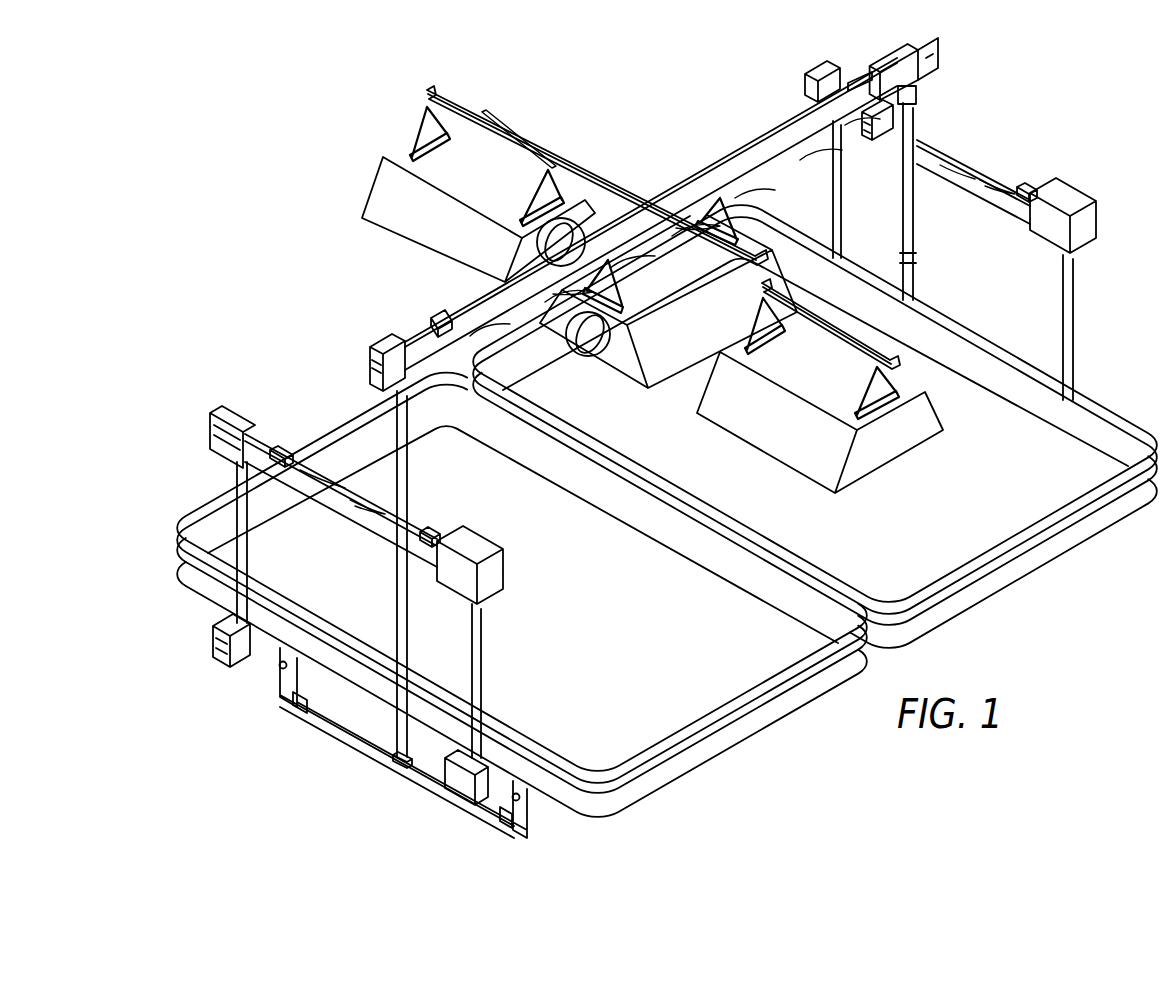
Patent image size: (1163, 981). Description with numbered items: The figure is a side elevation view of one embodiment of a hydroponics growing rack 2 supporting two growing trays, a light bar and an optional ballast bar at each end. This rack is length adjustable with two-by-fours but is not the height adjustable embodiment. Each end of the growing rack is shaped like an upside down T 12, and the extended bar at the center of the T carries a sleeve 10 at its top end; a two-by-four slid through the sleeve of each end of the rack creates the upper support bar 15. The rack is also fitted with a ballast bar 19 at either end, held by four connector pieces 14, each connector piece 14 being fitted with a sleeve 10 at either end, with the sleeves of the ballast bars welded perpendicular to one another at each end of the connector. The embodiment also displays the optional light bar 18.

The frame assembly 2 is at (917, 131).
The sleeve 10 is at (892, 58).
The upside down T 12 is at (393, 713).
The connector piece 14 is at (832, 177).
The upper support bar 15 is at (700, 177).
The light bar 18 is at (602, 176).
The ballast bar 19 is at (990, 177).